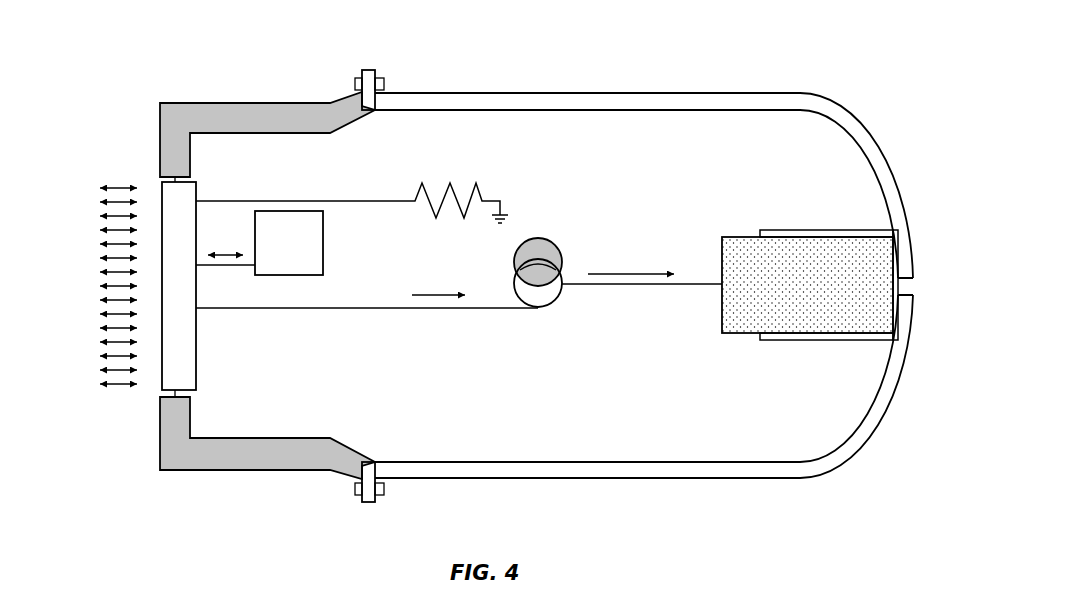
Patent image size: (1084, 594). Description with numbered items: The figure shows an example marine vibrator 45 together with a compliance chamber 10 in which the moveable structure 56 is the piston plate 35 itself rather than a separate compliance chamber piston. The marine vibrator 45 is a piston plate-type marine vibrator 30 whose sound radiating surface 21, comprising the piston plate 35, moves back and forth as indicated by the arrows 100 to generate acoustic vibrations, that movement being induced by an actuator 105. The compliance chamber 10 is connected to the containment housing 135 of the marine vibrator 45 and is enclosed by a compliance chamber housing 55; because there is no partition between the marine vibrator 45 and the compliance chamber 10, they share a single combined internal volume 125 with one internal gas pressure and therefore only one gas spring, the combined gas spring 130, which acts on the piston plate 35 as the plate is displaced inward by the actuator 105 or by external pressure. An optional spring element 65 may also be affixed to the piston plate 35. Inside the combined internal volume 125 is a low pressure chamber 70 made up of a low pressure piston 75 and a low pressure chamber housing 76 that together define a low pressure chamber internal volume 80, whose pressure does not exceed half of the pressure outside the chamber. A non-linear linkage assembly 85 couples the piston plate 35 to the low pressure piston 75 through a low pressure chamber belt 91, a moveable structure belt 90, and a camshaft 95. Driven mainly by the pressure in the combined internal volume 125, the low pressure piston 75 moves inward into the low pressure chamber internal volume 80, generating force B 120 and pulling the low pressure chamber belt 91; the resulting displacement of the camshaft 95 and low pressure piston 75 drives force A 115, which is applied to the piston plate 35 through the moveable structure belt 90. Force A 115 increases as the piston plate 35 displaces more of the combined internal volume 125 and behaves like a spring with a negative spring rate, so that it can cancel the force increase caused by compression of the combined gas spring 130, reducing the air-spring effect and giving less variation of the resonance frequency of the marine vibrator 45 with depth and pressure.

The compliance chamber 10 is at (790, 68).
The marine vibrator 45 is at (146, 70).
The piston plate-type marine vibrator 30 is at (212, 115).
The combined internal volume 125 is at (292, 415).
The containment housing 135 is at (298, 100).
The compliance chamber housing 55 is at (482, 103).
The combined gas spring 130 is at (806, 146).
The low pressure chamber 70 is at (848, 216).
The low pressure chamber housing 76 is at (866, 340).
The low pressure piston 75 is at (740, 320).
The low pressure chamber internal volume 80 is at (858, 300).
The moveable structure 56 is at (166, 190).
The piston plate 35 is at (172, 372).
The sound radiating surface 21 is at (184, 380).
The arrows 100 is at (88, 288).
The spring element 65 is at (476, 188).
The actuator 105 is at (290, 263).
The moveable structure belt 90 is at (482, 308).
The force A 115 is at (444, 290).
The camshaft 95 is at (540, 240).
The non-linear linkage assembly 85 is at (574, 242).
The force B 120 is at (644, 272).
The low pressure chamber belt 91 is at (694, 286).